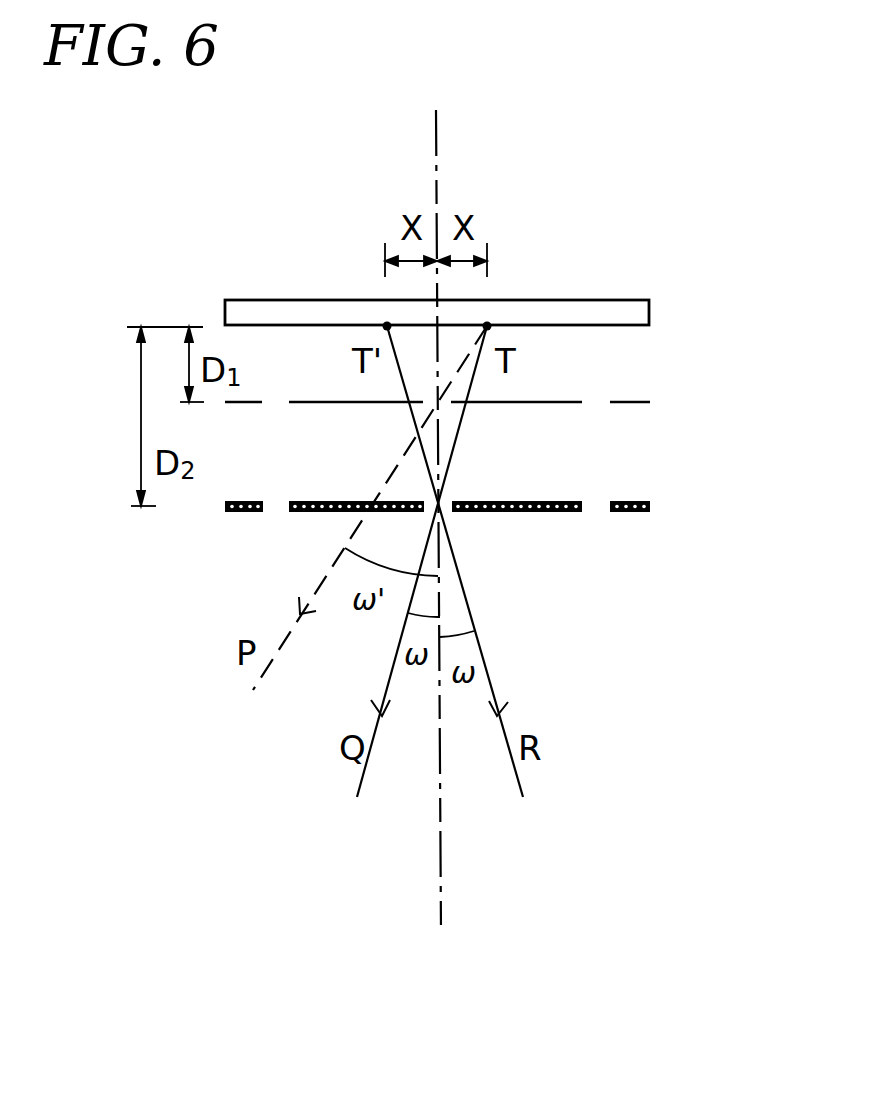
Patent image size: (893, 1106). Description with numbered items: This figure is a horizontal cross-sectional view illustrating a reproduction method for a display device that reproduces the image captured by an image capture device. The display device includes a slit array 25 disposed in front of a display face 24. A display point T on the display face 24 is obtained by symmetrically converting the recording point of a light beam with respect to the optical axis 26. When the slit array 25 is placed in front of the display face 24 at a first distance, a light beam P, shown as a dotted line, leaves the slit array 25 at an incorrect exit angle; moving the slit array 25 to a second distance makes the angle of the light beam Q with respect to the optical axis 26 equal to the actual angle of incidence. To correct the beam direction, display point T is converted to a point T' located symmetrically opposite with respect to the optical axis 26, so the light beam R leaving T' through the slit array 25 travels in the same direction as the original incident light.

The display face 24 is at (649, 312).
The slit array 25 is at (648, 500).
The optical axis 26 is at (438, 493).